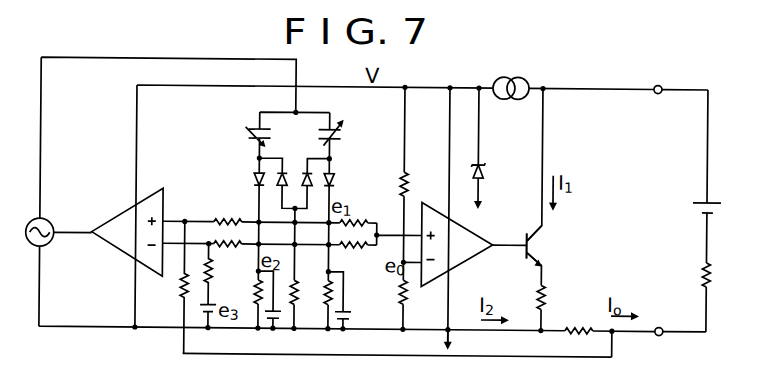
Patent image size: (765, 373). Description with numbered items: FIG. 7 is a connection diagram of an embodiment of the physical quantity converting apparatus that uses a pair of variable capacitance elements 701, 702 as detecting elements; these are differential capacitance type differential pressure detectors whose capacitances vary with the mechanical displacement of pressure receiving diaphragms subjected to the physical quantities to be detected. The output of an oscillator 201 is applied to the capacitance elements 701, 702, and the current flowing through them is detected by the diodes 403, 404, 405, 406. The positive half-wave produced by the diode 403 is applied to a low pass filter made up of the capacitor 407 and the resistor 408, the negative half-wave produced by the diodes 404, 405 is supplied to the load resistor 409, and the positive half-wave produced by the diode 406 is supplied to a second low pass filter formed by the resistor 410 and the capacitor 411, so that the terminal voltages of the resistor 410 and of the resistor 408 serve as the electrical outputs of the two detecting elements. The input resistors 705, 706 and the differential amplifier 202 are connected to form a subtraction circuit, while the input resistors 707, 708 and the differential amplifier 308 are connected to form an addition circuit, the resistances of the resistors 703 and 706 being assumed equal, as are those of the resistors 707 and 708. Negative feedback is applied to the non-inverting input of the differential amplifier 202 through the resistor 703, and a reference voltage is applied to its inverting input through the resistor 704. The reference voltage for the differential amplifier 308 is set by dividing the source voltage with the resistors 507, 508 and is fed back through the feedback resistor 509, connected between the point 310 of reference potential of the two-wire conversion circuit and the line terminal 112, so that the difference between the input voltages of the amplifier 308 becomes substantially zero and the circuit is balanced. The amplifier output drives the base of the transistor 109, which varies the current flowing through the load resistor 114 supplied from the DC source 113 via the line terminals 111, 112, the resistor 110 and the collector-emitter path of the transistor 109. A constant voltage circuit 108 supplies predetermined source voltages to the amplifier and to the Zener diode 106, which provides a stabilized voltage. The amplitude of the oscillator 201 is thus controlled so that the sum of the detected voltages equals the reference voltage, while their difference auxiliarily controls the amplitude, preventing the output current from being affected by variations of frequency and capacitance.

The oscillator 201 is at (48, 220).
The differential amplifier 202 is at (127, 232).
The resistor 703 is at (184, 288).
The resistor 704 is at (211, 276).
The input resistor 705 is at (229, 207).
The input resistor 706 is at (230, 258).
The input resistor 707 is at (357, 208).
The resistor 708 is at (356, 257).
The variable capacitance element 702 is at (256, 138).
The variable capacitance element 701 is at (338, 118).
The diode 403 is at (257, 178).
The diode 404 is at (289, 178).
The diode 405 is at (310, 176).
The diode 406 is at (331, 180).
The capacitor 407 is at (283, 318).
The resistor 408 is at (255, 300).
The load resistor 409 is at (300, 286).
The resistor 410 is at (326, 294).
The capacitor 411 is at (350, 318).
The resistor 507 is at (417, 185).
The resistor 508 is at (416, 299).
The Zener diode 106 is at (490, 186).
The constant voltage circuit 108 is at (511, 79).
The differential amplifier 308 is at (457, 244).
The transistor 109 is at (545, 245).
The resistor 110 is at (554, 298).
The feedback resistor 509 is at (579, 318).
The point of reference potential 310 is at (460, 344).
The line terminal 111 is at (661, 77).
The line terminal 112 is at (660, 344).
The DC source 113 is at (718, 207).
The load resistor 114 is at (720, 273).